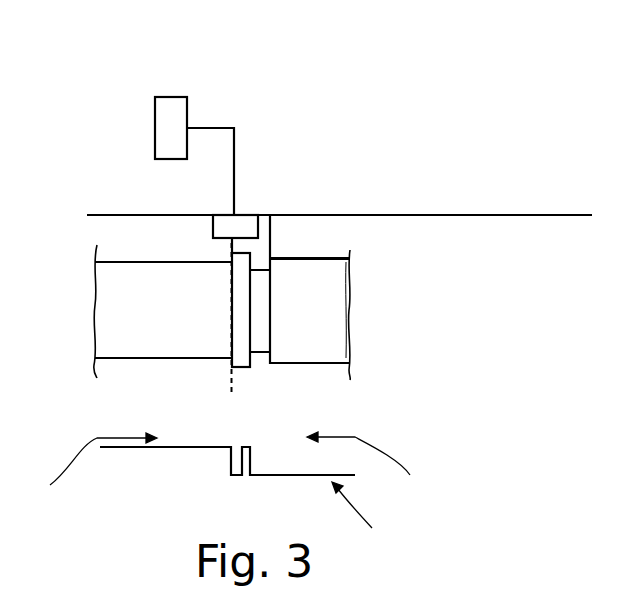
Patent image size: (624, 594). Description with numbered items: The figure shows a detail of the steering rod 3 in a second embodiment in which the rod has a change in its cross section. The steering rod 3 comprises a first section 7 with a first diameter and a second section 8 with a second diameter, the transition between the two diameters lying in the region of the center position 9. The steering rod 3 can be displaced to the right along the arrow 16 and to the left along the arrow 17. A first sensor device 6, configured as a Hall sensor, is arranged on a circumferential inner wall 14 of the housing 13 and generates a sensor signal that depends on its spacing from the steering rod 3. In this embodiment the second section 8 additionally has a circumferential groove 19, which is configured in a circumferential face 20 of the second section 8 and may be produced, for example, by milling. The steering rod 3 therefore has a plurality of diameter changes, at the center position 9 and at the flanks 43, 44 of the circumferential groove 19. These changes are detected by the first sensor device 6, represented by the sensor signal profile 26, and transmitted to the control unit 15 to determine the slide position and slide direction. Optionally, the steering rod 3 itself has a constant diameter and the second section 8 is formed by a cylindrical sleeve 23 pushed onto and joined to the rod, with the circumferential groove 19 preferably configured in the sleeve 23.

The steering rod 3 is at (390, 118).
The first sensor device 6 is at (247, 215).
The first section 7 is at (92, 252).
The second section 8 is at (333, 327).
The center position 9 is at (232, 390).
The housing 13 is at (118, 213).
The circumferential inner wall 14 is at (516, 213).
The control unit 15 is at (172, 95).
The arrow 16 is at (88, 468).
The arrow 17 is at (367, 467).
The circumferential groove 19 is at (257, 355).
The circumferential face 20 is at (347, 252).
The sleeve 23 is at (333, 282).
The sensor signal profile 26 is at (362, 521).
The flank 43 is at (252, 295).
The flank 44 is at (263, 326).